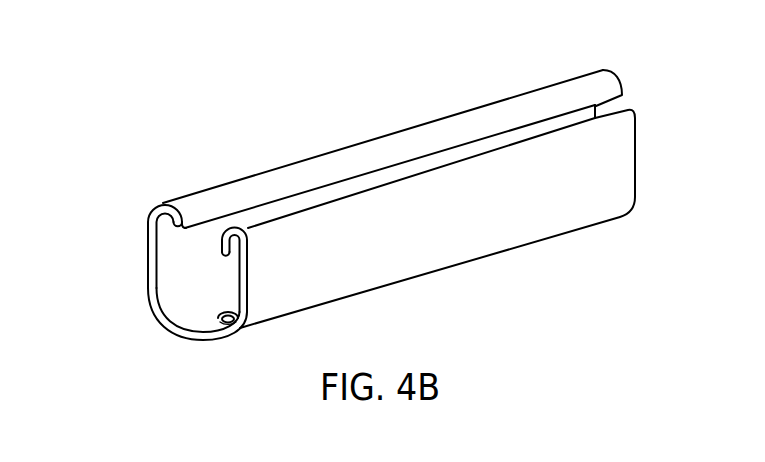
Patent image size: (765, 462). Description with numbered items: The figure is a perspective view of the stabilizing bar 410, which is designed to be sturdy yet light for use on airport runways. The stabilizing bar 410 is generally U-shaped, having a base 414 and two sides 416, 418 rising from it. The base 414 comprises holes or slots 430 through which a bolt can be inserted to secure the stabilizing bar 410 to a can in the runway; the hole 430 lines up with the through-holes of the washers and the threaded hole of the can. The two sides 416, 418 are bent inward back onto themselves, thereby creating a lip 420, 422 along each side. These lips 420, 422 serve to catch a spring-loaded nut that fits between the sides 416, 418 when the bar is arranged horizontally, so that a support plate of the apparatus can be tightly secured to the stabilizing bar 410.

The first stabilizing bar 410 is at (125, 171).
The base 414 is at (181, 328).
The side 416 is at (453, 250).
The side 418 is at (151, 258).
The lip 420 is at (229, 259).
The lip 422 is at (213, 199).
The hole or slot 430 is at (228, 325).